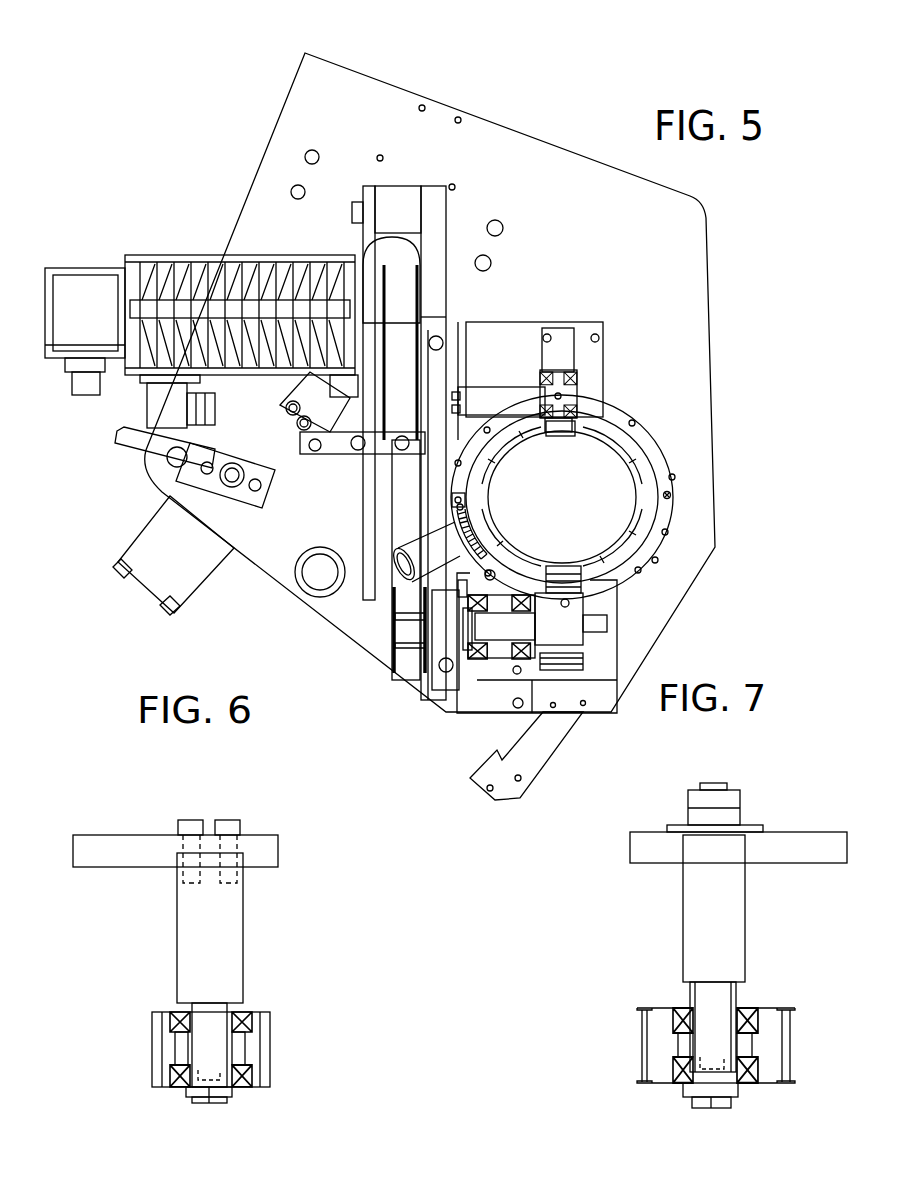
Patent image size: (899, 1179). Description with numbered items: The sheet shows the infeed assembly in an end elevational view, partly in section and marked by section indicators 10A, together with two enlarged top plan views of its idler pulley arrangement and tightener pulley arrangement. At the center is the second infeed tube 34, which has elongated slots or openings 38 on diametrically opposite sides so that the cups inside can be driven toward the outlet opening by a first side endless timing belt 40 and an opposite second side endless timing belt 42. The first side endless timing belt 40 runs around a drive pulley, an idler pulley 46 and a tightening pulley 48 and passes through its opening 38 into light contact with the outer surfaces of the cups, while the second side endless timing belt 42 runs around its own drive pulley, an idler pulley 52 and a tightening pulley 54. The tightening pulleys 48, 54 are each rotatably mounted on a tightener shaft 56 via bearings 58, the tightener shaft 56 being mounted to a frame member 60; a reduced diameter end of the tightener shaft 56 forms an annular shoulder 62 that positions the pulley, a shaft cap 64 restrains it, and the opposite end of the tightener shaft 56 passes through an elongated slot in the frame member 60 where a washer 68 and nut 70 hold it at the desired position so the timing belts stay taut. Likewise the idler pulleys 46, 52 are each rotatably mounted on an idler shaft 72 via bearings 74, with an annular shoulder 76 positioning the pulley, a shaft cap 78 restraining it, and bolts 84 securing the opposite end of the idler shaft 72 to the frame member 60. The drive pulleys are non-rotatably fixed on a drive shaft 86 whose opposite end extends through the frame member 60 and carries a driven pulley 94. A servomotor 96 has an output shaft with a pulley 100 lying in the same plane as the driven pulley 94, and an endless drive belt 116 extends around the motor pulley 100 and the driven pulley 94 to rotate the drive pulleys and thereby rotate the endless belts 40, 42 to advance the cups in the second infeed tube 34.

In FIG. 5, the section indicator 10A is at (450, 462).
In FIG. 5, the second infeed tube 34 is at (635, 478).
In FIG. 5, the elongated slots or openings 38 is at (580, 423).
In FIG. 5, the first side endless timing belt 40 is at (561, 437).
In FIG. 5, the second side endless timing belt 42 is at (575, 673).
In FIG. 6, the idler pulley 46 is at (255, 1024).
In FIG. 5, the tightening pulley 48 is at (577, 368).
In FIG. 7, the tightening pulley 48 is at (675, 1010).
In FIG. 6, the idler pulley 52 is at (255, 1024).
In FIG. 5, the tightening pulley 54 is at (580, 643).
In FIG. 7, the tightening pulley 54 is at (675, 1010).
In FIG. 7, the tightener shaft 56 is at (682, 923).
In FIG. 7, the bearings 58 is at (757, 1060).
In FIG. 6, the frame member 60 is at (278, 847).
In FIG. 7, the frame member 60 is at (630, 862).
In FIG. 7, the annular shoulder 62 is at (683, 988).
In FIG. 7, the shaft cap 64 is at (683, 1092).
In FIG. 7, the washer 68 is at (755, 825).
In FIG. 7, the nut 70 is at (688, 805).
In FIG. 6, the idler shaft 72 is at (243, 927).
In FIG. 6, the bearings 74 is at (250, 1070).
In FIG. 6, the annular shoulder 76 is at (178, 1003).
In FIG. 6, the shaft cap 78 is at (186, 1087).
In FIG. 6, the bolts 84 is at (203, 815).
In FIG. 5, the drive shaft 86 is at (485, 400).
In FIG. 5, the driven pulley 94 is at (383, 400).
In FIG. 5, the servomotor 96 is at (214, 255).
In FIG. 5, the pulley 100 is at (425, 298).
In FIG. 5, the endless drive belt 116 is at (403, 505).